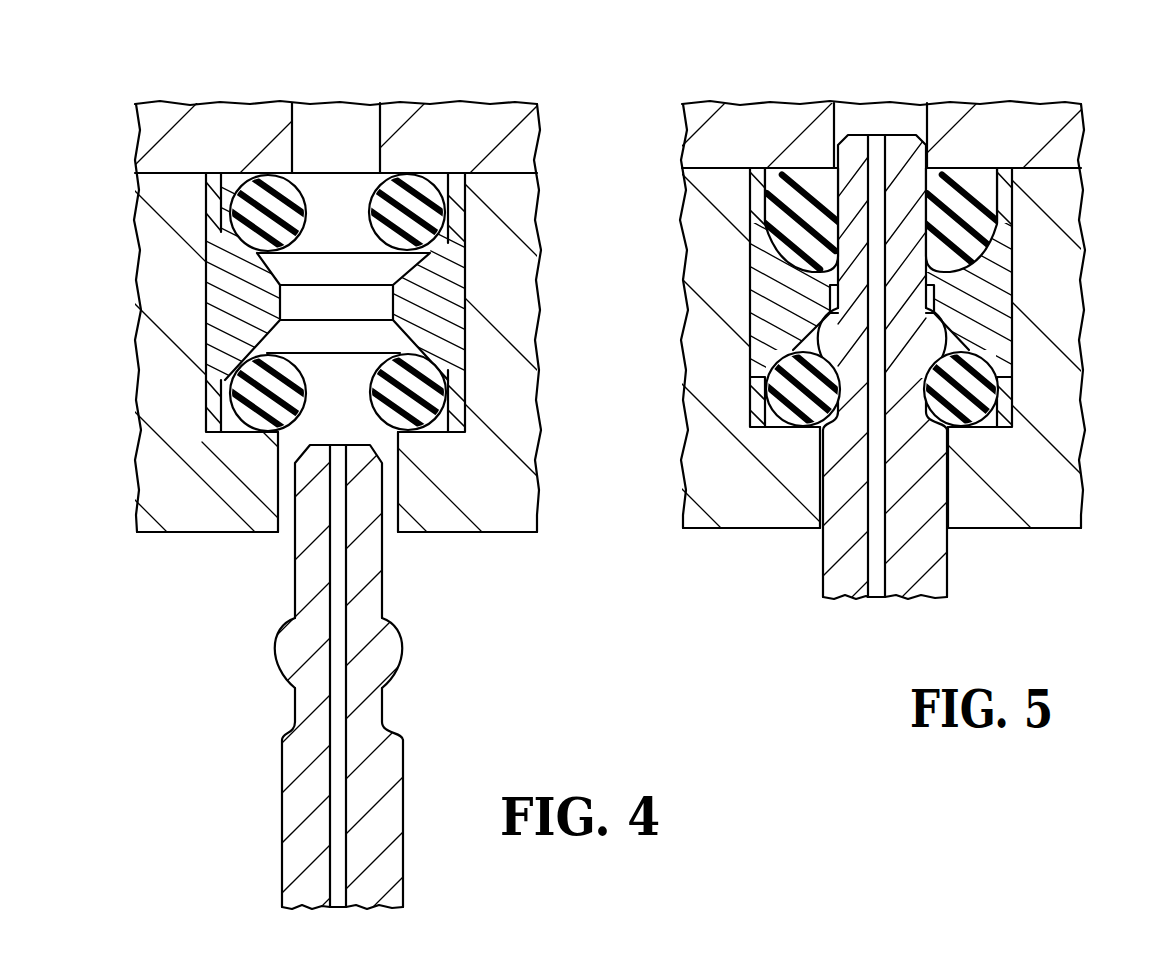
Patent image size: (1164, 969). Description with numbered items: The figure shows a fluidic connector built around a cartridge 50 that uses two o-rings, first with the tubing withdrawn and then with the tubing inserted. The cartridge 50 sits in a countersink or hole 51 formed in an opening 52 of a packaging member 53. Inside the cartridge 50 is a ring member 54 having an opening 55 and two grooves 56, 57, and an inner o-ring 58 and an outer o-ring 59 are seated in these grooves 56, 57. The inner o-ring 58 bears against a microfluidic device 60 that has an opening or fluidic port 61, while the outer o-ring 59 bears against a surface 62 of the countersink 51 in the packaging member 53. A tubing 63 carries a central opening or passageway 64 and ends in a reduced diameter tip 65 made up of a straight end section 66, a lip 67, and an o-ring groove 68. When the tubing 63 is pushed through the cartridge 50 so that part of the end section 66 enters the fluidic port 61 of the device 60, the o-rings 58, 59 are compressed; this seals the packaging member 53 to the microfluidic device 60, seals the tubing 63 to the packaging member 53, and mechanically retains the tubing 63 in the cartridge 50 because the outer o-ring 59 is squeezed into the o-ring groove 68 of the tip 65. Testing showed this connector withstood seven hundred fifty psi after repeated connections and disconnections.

In FIG. 4, the cartridge 50 is at (336, 285).
In FIG. 5, the cartridge 50 is at (885, 292).
In FIG. 4, the countersink 51 is at (208, 327).
In FIG. 4, the opening 52 is at (288, 528).
In FIG. 5, the opening 52 is at (818, 498).
In FIG. 4, the packaging member 53 is at (542, 498).
In FIG. 5, the packaging member 53 is at (1088, 480).
In FIG. 4, the ring member 54 is at (458, 408).
In FIG. 5, the ring member 54 is at (1002, 314).
In FIG. 4, the opening 55 is at (298, 283).
In FIG. 4, the groove 56 is at (222, 175).
In FIG. 4, the groove 57 is at (228, 430).
In FIG. 4, the inner o-ring 58 is at (437, 198).
In FIG. 5, the inner o-ring 58 is at (978, 210).
In FIG. 4, the outer o-ring 59 is at (430, 387).
In FIG. 5, the outer o-ring 59 is at (984, 397).
In FIG. 4, the microfluidic device 60 is at (492, 103).
In FIG. 5, the microfluidic device 60 is at (1024, 103).
In FIG. 4, the fluidic port 61 is at (293, 140).
In FIG. 5, the fluidic port 61 is at (836, 103).
In FIG. 4, the surface 62 is at (438, 434).
In FIG. 5, the surface 62 is at (985, 430).
In FIG. 4, the tubing 63 is at (405, 770).
In FIG. 4, the central opening 64 is at (341, 870).
In FIG. 5, the central opening 64 is at (880, 583).
In FIG. 4, the reduced diameter tip 65 is at (334, 687).
In FIG. 4, the straight end section 66 is at (293, 588).
In FIG. 5, the straight end section 66 is at (885, 391).
In FIG. 4, the lip 67 is at (402, 638).
In FIG. 4, the o-ring groove 68 is at (385, 715).